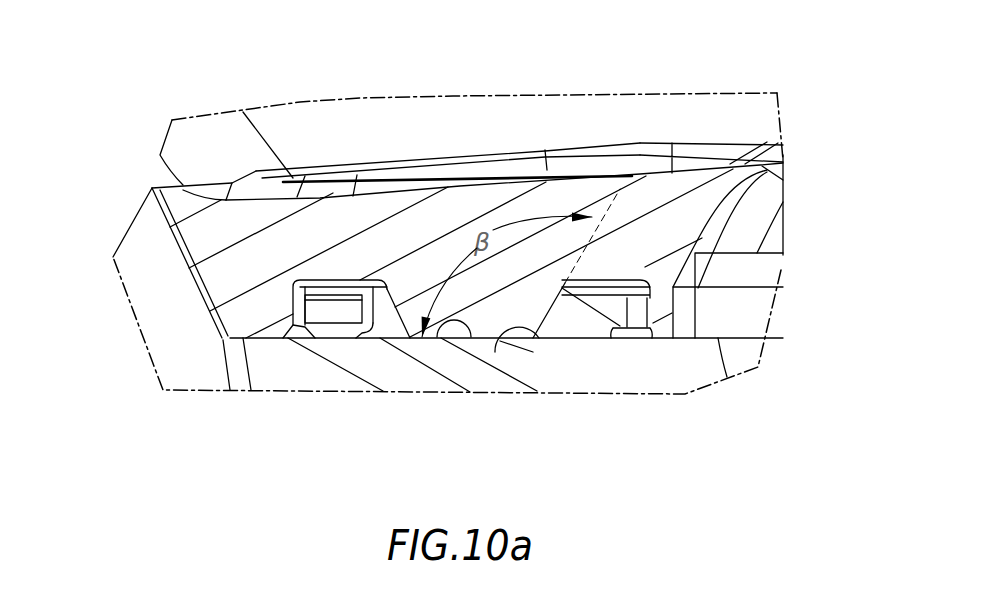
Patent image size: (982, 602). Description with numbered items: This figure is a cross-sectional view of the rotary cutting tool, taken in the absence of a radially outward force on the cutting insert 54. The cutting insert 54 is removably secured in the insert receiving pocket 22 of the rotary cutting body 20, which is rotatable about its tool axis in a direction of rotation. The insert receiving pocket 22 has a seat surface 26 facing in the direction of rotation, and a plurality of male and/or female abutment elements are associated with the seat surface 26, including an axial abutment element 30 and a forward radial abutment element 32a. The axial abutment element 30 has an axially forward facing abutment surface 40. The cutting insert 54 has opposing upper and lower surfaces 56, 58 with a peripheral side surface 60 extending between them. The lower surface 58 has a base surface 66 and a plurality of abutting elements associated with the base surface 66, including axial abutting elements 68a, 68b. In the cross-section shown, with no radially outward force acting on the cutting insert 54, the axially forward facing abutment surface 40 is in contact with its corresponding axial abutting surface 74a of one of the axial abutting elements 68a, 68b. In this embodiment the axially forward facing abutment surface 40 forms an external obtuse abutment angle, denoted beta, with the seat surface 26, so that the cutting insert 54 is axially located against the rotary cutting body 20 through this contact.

The rotary cutting body 20 is at (645, 358).
The insert receiving pocket 22 is at (710, 120).
The seat surface 26 is at (440, 326).
The axial abutment element 30 is at (587, 320).
The forward radial abutment element 32a is at (336, 308).
The axially forward facing abutment surface 40 is at (495, 352).
The cutting insert 54 is at (233, 277).
The upper surface 56 is at (396, 176).
The lower surface 58 is at (272, 345).
The peripheral side surface 60 is at (172, 242).
The base surface 66 is at (415, 345).
The axial abutting element 68a is at (607, 282).
The axial abutting element 68b is at (371, 294).
The axial abutting surface 74a is at (572, 325).